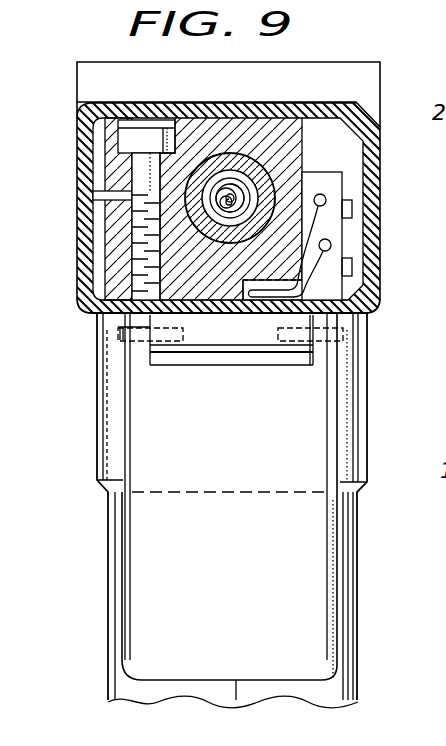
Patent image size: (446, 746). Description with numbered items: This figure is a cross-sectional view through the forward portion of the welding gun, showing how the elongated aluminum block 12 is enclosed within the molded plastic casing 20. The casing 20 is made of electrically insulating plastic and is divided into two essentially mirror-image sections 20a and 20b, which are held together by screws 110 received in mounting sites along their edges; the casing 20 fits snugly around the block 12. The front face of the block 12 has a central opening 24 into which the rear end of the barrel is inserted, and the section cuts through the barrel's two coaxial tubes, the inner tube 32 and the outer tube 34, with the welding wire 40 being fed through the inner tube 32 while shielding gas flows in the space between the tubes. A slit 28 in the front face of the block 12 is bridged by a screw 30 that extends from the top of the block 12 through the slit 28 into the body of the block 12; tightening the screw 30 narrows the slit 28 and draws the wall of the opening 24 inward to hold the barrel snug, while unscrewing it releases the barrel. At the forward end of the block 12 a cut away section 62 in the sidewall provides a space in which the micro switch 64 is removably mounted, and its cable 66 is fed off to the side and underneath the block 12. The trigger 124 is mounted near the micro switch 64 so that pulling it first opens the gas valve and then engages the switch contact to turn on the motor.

The molded plastic casing 20 is at (76, 98).
The casing section 20a is at (82, 303).
The casing section 20b is at (378, 303).
The elongated aluminum block 12 is at (216, 305).
The slit 28 is at (93, 198).
The screw 30 is at (133, 130).
The inner tube 32 is at (217, 190).
The outer tube 34 is at (207, 228).
The central opening 24 is at (240, 160).
The wire 40 is at (236, 196).
The cut away section 62 is at (344, 185).
The micro switch 64 is at (343, 235).
The cable 66 is at (263, 314).
The screws 110 is at (359, 561).
The trigger 124 is at (262, 583).